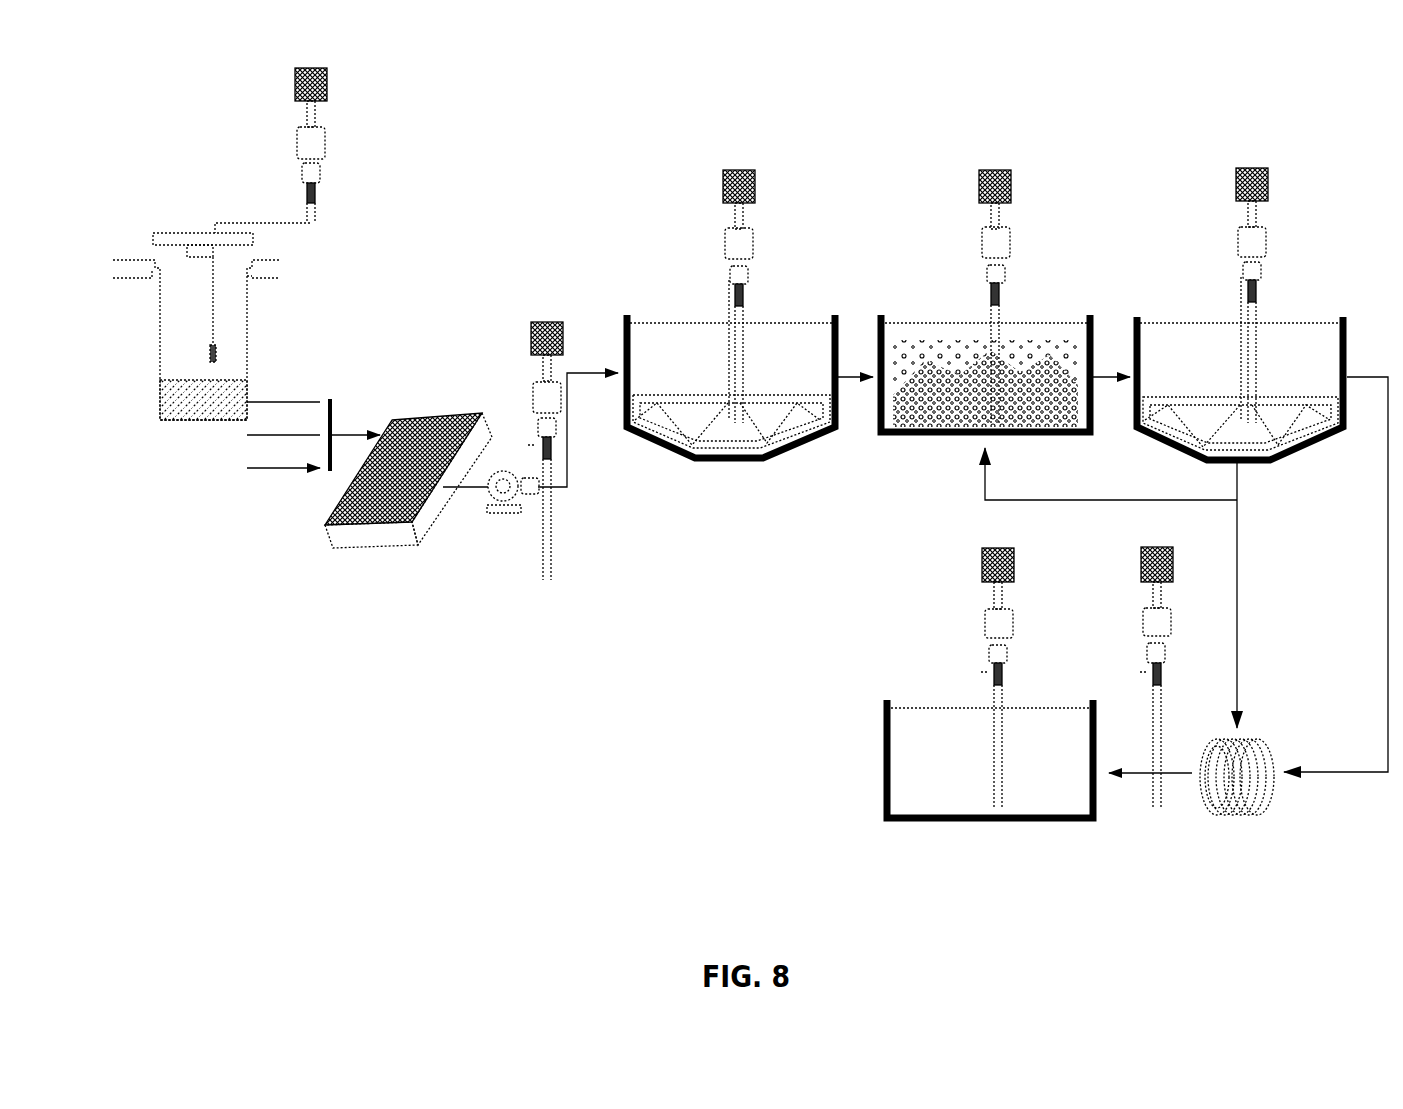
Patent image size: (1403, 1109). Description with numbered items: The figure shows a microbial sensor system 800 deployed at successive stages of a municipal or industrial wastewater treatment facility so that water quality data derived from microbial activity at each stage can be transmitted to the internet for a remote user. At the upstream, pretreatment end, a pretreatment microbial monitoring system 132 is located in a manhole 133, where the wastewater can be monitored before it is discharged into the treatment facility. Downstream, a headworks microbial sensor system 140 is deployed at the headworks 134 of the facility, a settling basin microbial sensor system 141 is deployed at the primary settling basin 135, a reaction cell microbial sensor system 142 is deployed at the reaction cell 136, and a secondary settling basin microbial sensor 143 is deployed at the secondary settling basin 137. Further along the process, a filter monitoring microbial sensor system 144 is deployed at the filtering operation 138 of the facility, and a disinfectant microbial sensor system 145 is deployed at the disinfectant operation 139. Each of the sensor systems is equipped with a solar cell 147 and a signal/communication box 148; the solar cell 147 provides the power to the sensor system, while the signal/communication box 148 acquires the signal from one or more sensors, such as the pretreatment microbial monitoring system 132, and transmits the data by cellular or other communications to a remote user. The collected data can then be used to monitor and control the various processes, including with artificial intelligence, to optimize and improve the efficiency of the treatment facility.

The microbial sensor system 800 is at (1116, 128).
The pretreatment microbial monitoring system 132 is at (206, 362).
The manhole 133 is at (252, 345).
The headworks 134 is at (445, 412).
The primary settling basin 135 is at (702, 320).
The reaction cell 136 is at (962, 320).
The secondary settling basin 137 is at (1212, 320).
The filtering operation 138 is at (1240, 822).
The disinfectant operation 139 is at (1036, 824).
The headworks microbial sensor system 140 is at (566, 335).
The settling basin microbial sensor system 141 is at (768, 180).
The reaction cell microbial sensor system 142 is at (1023, 178).
The secondary settling basin microbial sensor 143 is at (1281, 178).
The filter monitoring microbial sensor system 144 is at (1182, 558).
The disinfectant microbial sensor system 145 is at (1027, 558).
The solar cell 147 is at (332, 100).
The signal/communication box 148 is at (332, 160).